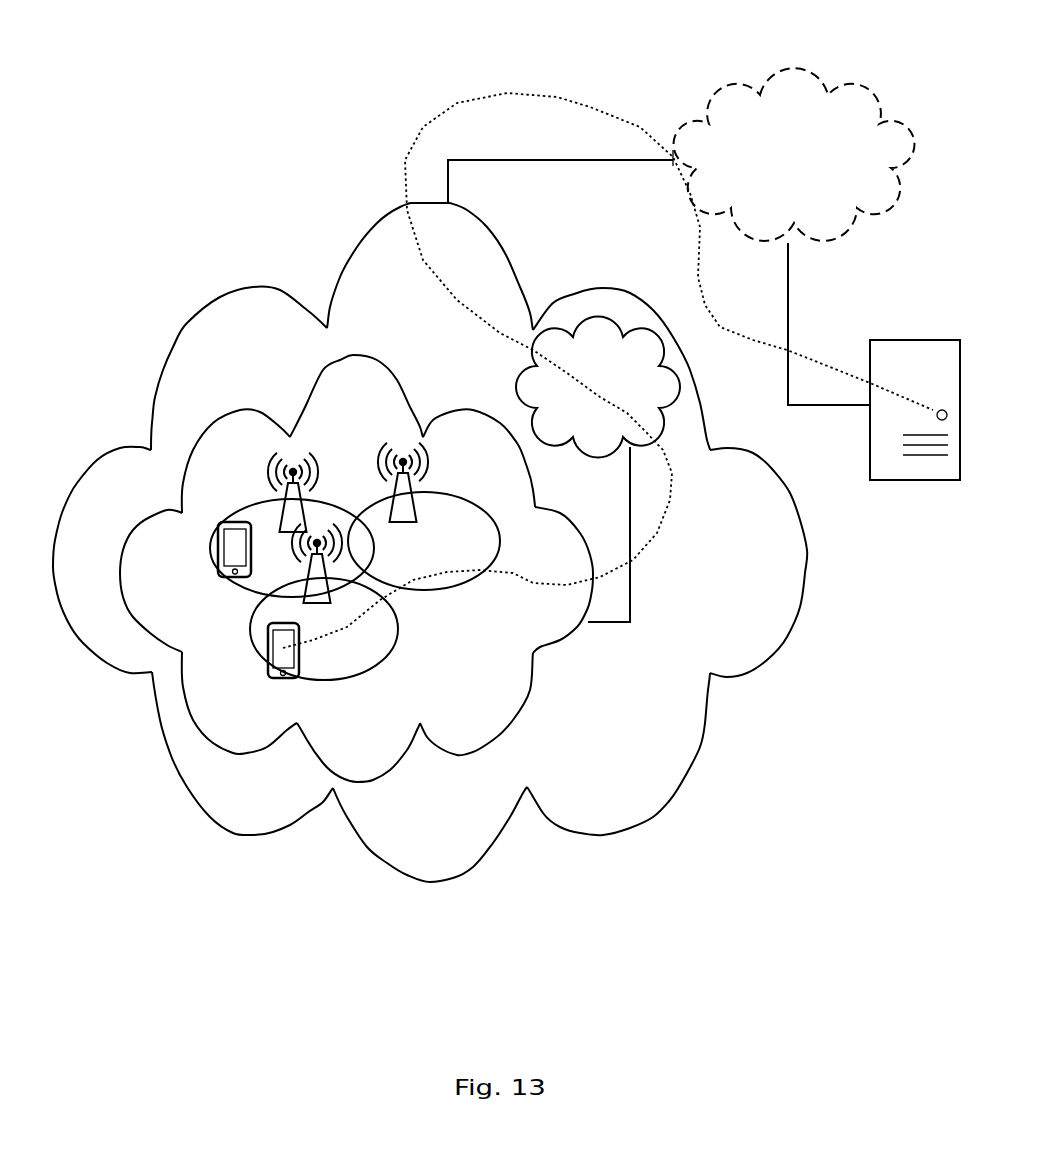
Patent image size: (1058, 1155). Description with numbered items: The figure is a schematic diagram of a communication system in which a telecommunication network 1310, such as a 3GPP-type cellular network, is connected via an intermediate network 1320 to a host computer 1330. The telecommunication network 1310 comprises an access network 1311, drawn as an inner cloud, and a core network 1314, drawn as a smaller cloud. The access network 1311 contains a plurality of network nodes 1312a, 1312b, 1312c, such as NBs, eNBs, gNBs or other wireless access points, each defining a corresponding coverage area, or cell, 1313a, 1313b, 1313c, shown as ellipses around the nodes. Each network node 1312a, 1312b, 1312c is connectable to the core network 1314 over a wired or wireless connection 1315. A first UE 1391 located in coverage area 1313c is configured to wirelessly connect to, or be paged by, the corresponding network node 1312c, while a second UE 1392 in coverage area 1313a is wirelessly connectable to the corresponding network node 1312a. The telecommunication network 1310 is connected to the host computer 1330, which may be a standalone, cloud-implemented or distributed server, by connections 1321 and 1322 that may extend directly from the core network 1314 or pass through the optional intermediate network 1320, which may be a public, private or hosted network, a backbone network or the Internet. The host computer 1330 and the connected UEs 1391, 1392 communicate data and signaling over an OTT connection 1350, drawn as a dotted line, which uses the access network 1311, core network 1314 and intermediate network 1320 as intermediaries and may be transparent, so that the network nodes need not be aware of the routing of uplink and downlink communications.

The telecommunication network 1310 is at (368, 313).
The access network 1311 is at (322, 423).
The core network 1314 is at (572, 371).
The connection 1315 is at (632, 583).
The intermediate network 1320 is at (765, 175).
The connection 1321 is at (572, 160).
The connection 1322 is at (822, 405).
The host computer 1330 is at (933, 480).
The OTT connection 1350 is at (425, 125).
The network node 1312a is at (333, 603).
The network node 1312b is at (413, 473).
The network node 1312c is at (283, 517).
The coverage area 1313a is at (395, 633).
The coverage area 1313b is at (460, 583).
The coverage area 1313c is at (267, 510).
The first UE 1391 is at (217, 557).
The second UE 1392 is at (268, 678).